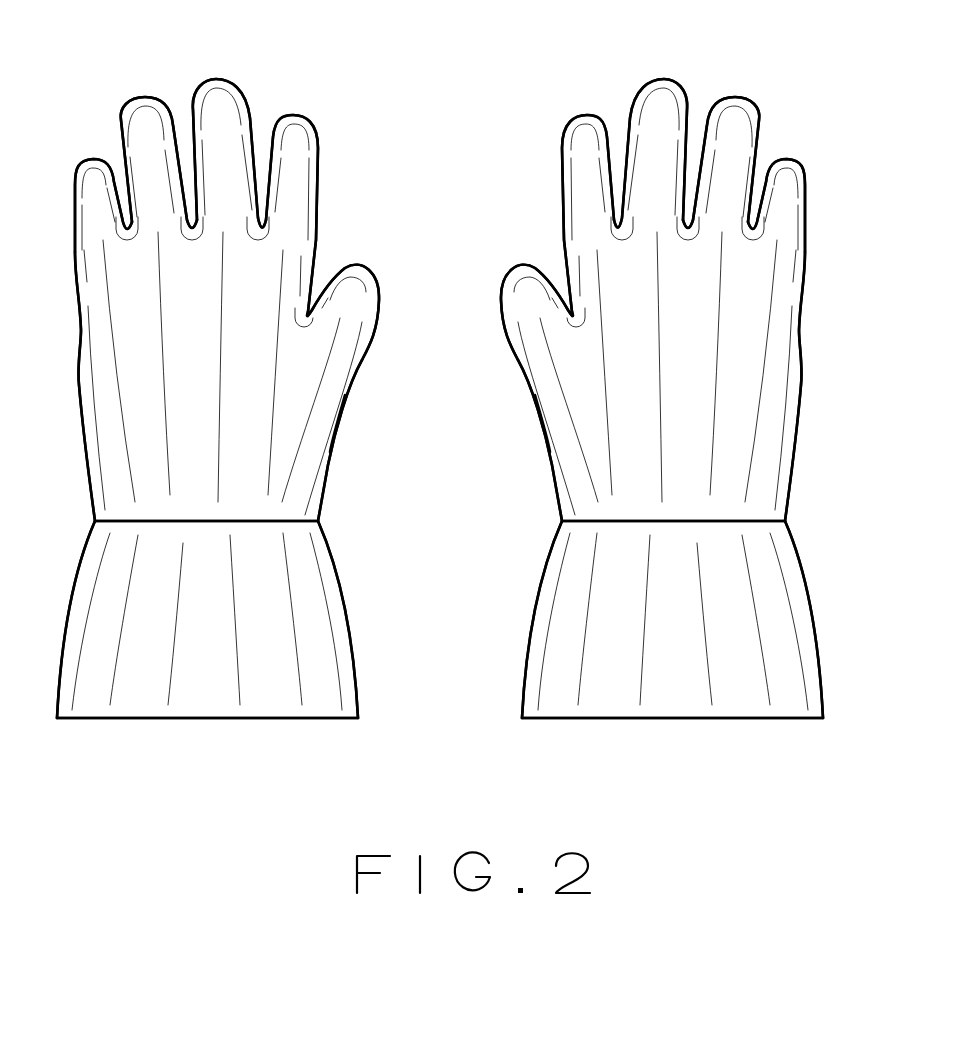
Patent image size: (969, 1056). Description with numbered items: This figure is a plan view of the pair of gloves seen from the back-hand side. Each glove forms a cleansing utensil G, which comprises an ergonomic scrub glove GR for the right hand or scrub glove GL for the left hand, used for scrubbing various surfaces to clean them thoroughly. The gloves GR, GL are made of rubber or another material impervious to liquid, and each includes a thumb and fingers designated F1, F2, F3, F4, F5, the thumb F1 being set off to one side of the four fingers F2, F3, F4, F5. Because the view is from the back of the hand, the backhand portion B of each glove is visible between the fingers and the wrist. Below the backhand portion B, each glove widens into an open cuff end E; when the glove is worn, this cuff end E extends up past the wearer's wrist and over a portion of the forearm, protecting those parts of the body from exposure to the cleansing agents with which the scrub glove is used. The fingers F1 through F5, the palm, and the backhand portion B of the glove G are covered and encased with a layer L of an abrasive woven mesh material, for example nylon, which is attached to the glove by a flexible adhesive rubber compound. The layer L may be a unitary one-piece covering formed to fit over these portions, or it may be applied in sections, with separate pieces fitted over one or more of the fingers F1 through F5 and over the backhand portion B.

The right scrub glove GR is at (348, 497).
The left scrub glove GL is at (820, 485).
The thumb F1 is at (97, 155).
The finger F2 is at (150, 95).
The finger F3 is at (235, 82).
The finger F4 is at (318, 132).
The finger F5 is at (370, 275).
The backhand portion B is at (208, 383).
The cleansing utensil G is at (216, 622).
The cuff end E is at (203, 720).
The layer of abrasive woven mesh material L is at (342, 448).